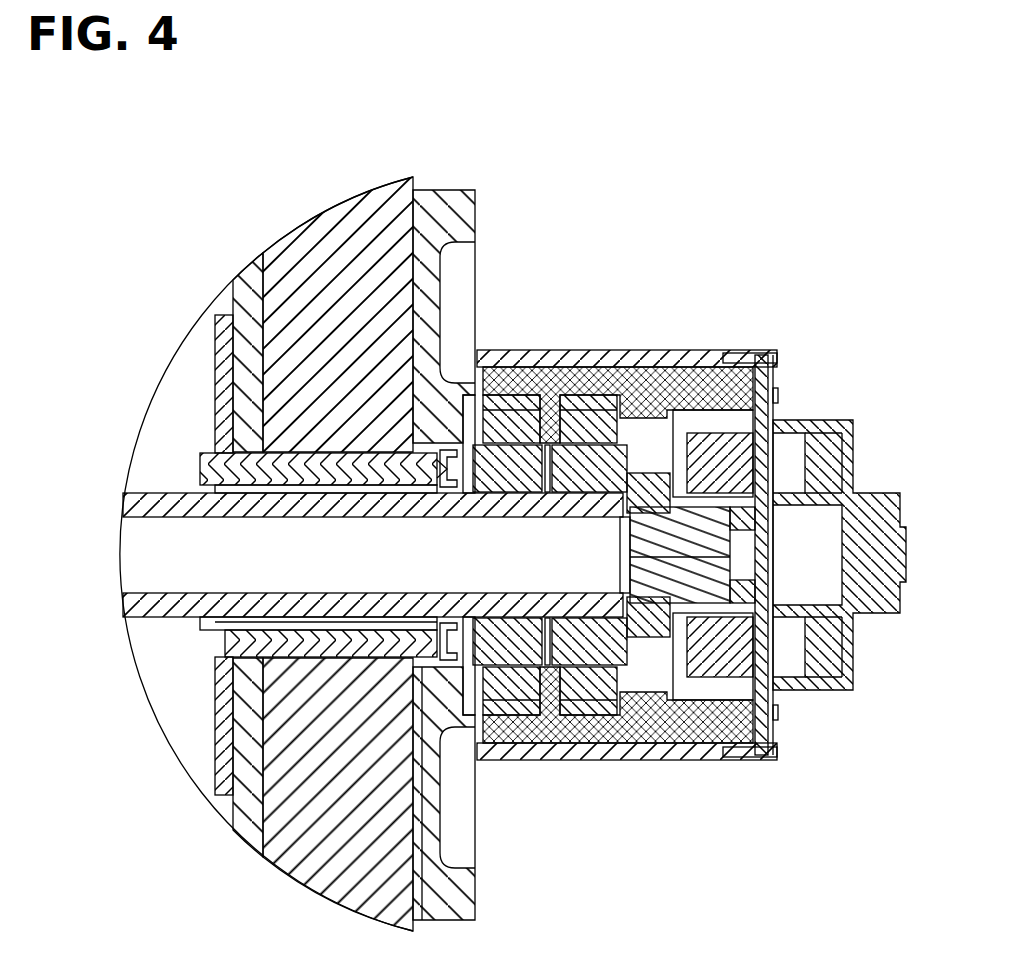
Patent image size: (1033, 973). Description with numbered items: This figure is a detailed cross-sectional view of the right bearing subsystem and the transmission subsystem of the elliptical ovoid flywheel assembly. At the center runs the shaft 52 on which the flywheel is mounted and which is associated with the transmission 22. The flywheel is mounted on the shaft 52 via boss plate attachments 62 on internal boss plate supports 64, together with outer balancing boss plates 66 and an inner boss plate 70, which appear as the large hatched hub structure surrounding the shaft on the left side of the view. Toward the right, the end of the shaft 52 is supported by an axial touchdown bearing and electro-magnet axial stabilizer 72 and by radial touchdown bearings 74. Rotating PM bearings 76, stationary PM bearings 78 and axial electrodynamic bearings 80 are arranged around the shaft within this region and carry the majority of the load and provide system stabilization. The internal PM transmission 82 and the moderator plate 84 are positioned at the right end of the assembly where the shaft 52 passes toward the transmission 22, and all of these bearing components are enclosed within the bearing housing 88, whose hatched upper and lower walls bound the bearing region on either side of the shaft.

The transmission 22 is at (855, 432).
The shaft 52 is at (152, 493).
The boss plate attachments 62 is at (423, 478).
The internal boss plate supports 64 is at (280, 492).
The outer balancing boss plates 66 is at (476, 222).
The inner boss plate 70 is at (213, 422).
The axial touchdown bearings and electro-magnet axial stabilizer 72 is at (777, 550).
The radial touchdown bearings 74 is at (667, 418).
The rotating PM bearings 76 is at (617, 395).
The stationary PM bearings 78 is at (535, 398).
The axial electrodynamic bearings 80 is at (480, 400).
The internal PM transmission 82 is at (778, 363).
The moderator plate 84 is at (778, 712).
The bearing housing 88 is at (675, 758).